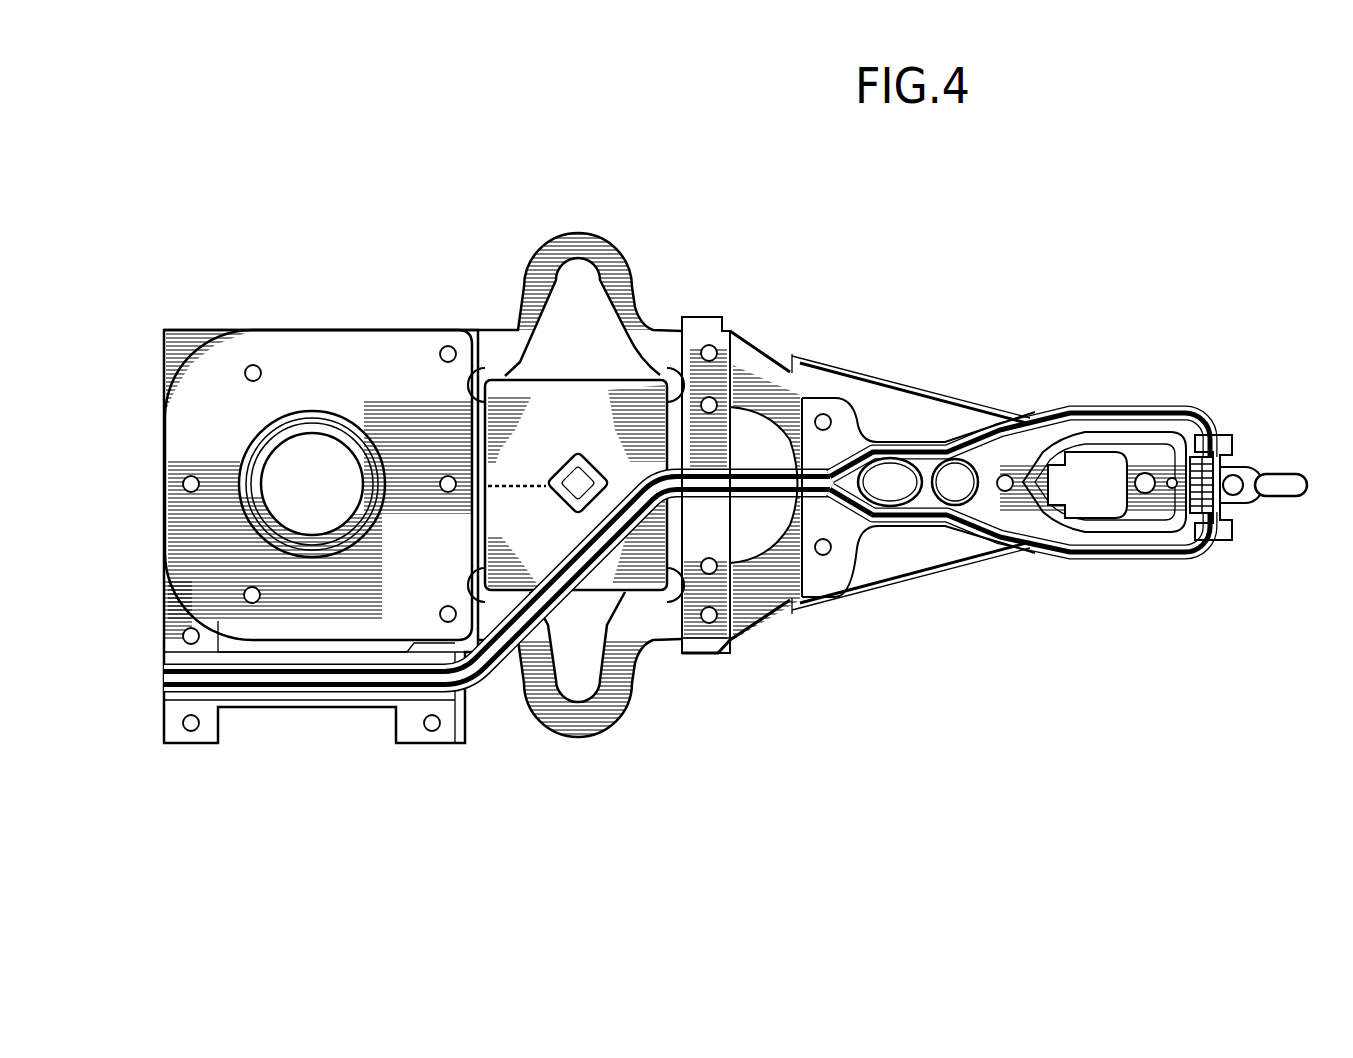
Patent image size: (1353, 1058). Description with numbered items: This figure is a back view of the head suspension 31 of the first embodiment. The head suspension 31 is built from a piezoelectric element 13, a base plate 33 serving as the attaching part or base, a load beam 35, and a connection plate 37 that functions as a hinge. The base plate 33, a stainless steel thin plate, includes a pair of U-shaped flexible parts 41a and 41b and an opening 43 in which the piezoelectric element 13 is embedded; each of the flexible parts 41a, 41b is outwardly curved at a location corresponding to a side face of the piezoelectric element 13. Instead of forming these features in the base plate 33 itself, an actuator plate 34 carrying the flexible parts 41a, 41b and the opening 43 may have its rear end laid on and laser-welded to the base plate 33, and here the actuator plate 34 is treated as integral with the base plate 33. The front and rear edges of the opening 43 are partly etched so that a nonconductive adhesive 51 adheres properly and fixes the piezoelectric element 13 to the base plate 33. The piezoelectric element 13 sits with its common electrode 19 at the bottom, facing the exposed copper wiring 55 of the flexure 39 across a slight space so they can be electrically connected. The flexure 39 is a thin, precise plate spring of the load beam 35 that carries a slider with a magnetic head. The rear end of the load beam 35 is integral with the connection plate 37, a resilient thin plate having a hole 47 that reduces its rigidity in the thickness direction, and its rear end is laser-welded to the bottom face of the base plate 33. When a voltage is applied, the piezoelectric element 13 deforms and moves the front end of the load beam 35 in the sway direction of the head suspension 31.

The piezoelectric element 13 is at (618, 562).
The common electrode 19 is at (518, 405).
The head suspension 31 is at (1046, 199).
The base plate 33 is at (305, 340).
The actuator plate 34 is at (490, 757).
The load beam 35 is at (907, 503).
The connection plate 37 is at (770, 367).
The flexure 39 is at (1123, 555).
The flexible part 41a is at (577, 240).
The flexible part 41b is at (575, 718).
The opening 43 is at (583, 620).
The hole 47 is at (758, 598).
The nonconductive adhesive 51 is at (487, 372).
The wiring 55 is at (578, 483).